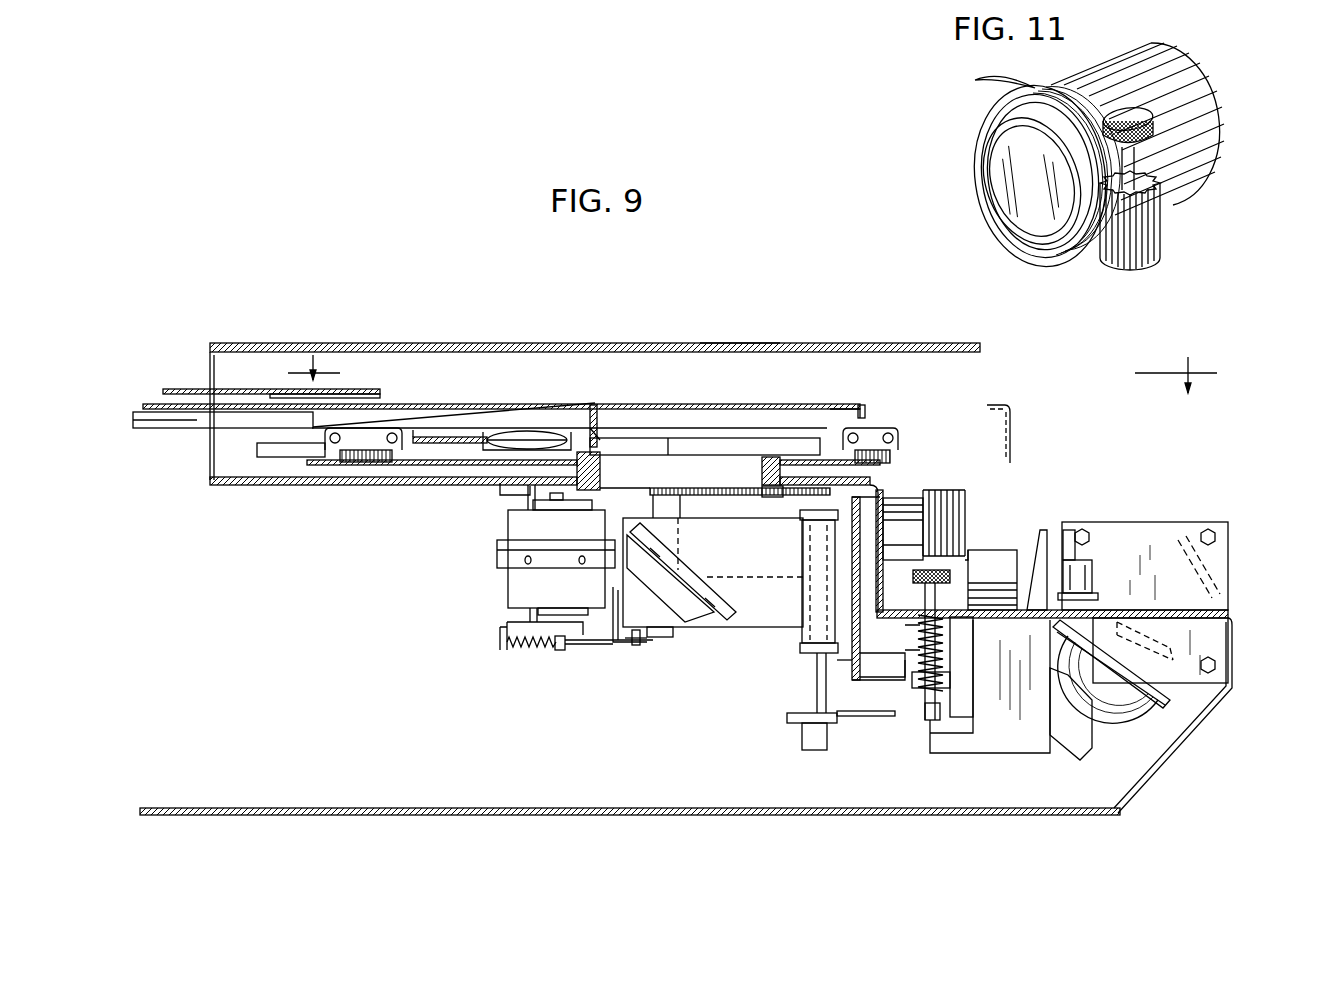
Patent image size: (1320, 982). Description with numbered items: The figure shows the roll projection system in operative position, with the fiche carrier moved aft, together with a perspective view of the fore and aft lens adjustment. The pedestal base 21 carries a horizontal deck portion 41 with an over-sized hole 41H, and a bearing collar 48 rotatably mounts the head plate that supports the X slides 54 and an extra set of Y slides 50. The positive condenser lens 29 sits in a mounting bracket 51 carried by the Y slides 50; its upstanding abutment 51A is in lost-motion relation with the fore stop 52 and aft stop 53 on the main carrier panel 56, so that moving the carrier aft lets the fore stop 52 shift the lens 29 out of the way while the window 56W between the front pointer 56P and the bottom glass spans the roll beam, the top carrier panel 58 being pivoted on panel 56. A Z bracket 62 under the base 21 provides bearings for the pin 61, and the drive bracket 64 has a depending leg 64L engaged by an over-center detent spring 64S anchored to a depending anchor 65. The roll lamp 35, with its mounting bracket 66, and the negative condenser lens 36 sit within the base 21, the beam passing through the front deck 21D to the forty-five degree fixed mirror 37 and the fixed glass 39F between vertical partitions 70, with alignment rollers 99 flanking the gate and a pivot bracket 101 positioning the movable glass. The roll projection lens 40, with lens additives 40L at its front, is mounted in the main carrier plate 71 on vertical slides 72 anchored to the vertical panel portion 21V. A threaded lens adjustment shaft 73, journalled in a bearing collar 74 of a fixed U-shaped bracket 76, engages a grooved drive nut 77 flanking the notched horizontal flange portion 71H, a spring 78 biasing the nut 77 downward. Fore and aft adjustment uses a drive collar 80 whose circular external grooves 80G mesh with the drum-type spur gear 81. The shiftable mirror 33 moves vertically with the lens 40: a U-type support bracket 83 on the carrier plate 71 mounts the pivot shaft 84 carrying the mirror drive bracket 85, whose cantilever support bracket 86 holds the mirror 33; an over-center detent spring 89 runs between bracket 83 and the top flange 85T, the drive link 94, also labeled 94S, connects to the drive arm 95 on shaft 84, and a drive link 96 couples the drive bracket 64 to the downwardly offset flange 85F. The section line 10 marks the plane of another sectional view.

In FIG. 9, the section line 10 is at (756, 370).
In FIG. 9, the pedestal base 21 is at (352, 486).
In FIG. 9, the front deck 21D is at (1222, 616).
In FIG. 9, the vertical panel portion 21V is at (880, 492).
In FIG. 9, the positive condenser lens 29 is at (510, 425).
In FIG. 9, the shiftable reflecting mirror 33 is at (678, 553).
In FIG. 9, the lamp 35 is at (1152, 713).
In FIG. 9, the negative condenser lens 36 is at (1147, 636).
In FIG. 9, the fixed mirror 37 is at (1213, 585).
In FIG. 9, the fixed glass 39F is at (1070, 533).
In FIG. 9, the projection lens 40 is at (915, 544).
In FIG. 11, the projection lens 40 is at (1232, 112).
In FIG. 9, the lens additives 40L is at (1013, 591).
In FIG. 11, the lens additives 40L is at (1005, 182).
In FIG. 9, the horizontal deck portion 41 is at (867, 345).
In FIG. 9, the over-sized hole 41H is at (742, 342).
In FIG. 9, the bearing collar 48 is at (598, 476).
In FIG. 9, the Y slides 50 is at (287, 457).
In FIG. 9, the mounting bracket 51 is at (438, 446).
In FIG. 9, the upstanding abutment 51A is at (598, 430).
In FIG. 9, the fore stop 52 is at (600, 418).
In FIG. 9, the aft stop 53 is at (190, 428).
In FIG. 9, the X slides 54 is at (330, 452).
In FIG. 9, the main carrier panel 56 is at (790, 403).
In FIG. 9, the front pointer 56P is at (866, 416).
In FIG. 9, the window 56W is at (707, 403).
In FIG. 9, the top carrier panel 58 is at (215, 388).
In FIG. 9, the pin 61 is at (560, 650).
In FIG. 9, the Z bracket 62 is at (515, 494).
In FIG. 9, the drive bracket 64 is at (613, 644).
In FIG. 9, the depending leg 64L is at (610, 642).
In FIG. 9, the detent spring 64S is at (553, 646).
In FIG. 9, the depending anchor 65 is at (510, 623).
In FIG. 9, the mounting bracket 66 is at (1165, 702).
In FIG. 9, the vertical partitions 70 is at (1165, 530).
In FIG. 9, the main carrier plate 71 is at (820, 670).
In FIG. 9, the notched horizontal flange portion 71H is at (888, 666).
In FIG. 9, the vertical slides 72 is at (866, 590).
In FIG. 9, the lens adjustment shaft 73 is at (930, 598).
In FIG. 9, the bearing collar 74 is at (918, 625).
In FIG. 9, the U-shaped bracket 76 is at (950, 695).
In FIG. 9, the drive nut 77 is at (920, 682).
In FIG. 9, the spring 78 is at (945, 648).
In FIG. 9, the drive collar 80 is at (958, 503).
In FIG. 11, the drive collar 80 is at (1075, 255).
In FIG. 11, the external grooves 80G is at (986, 79).
In FIG. 11, the spur gear 81 is at (1160, 232).
In FIG. 9, the U-type support bracket 83 is at (805, 517).
In FIG. 9, the pivot shaft 84 is at (817, 687).
In FIG. 9, the mirror drive bracket 85 is at (778, 607).
In FIG. 9, the downwardly offset flange 85F is at (648, 642).
In FIG. 9, the top flange 85T is at (650, 500).
In FIG. 9, the cantilever type support bracket 86 is at (670, 605).
In FIG. 9, the detent spring 89 is at (712, 492).
In FIG. 9, the drive link 94 is at (878, 713).
In FIG. 9, the pad support 94S is at (793, 725).
In FIG. 9, the drive arm 95 is at (810, 742).
In FIG. 9, the drive link 96 is at (637, 632).
In FIG. 9, the alignment rollers 99 is at (1088, 574).
In FIG. 9, the bracket 101 is at (1043, 530).